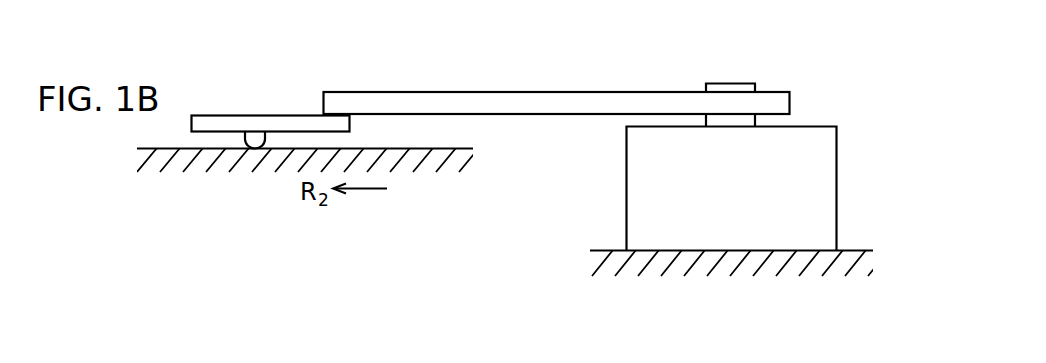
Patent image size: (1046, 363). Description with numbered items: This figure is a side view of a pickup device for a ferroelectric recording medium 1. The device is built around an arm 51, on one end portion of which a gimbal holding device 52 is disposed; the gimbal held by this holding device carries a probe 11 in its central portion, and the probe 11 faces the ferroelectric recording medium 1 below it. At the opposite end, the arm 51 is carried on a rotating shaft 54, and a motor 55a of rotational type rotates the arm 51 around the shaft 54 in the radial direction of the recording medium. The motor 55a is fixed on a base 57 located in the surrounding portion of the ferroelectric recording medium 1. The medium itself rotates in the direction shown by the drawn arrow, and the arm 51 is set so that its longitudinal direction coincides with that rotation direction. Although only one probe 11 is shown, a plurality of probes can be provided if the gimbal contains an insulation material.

The ferroelectric recording medium 1 is at (437, 167).
The probe 11 is at (255, 150).
The arm 51 is at (530, 92).
The gimbal holding device 52 is at (278, 115).
The rotating shaft 54 is at (733, 83).
The motor 55a is at (838, 186).
The base 57 is at (740, 270).